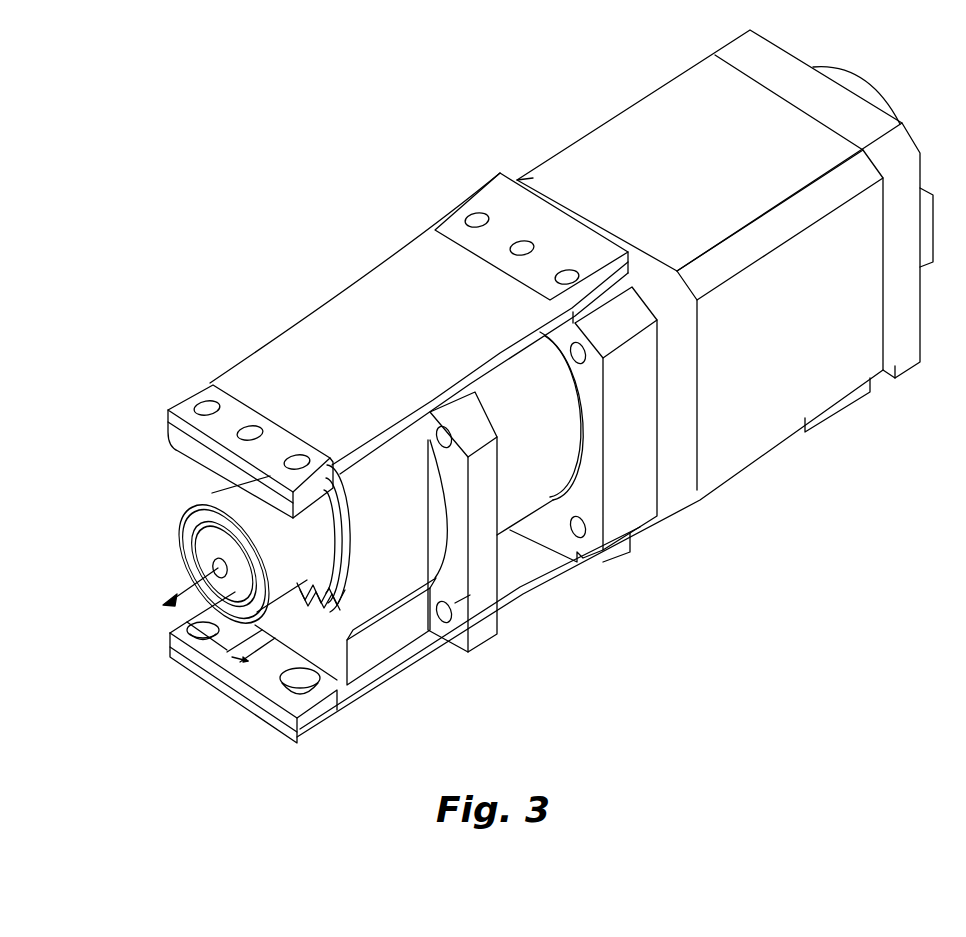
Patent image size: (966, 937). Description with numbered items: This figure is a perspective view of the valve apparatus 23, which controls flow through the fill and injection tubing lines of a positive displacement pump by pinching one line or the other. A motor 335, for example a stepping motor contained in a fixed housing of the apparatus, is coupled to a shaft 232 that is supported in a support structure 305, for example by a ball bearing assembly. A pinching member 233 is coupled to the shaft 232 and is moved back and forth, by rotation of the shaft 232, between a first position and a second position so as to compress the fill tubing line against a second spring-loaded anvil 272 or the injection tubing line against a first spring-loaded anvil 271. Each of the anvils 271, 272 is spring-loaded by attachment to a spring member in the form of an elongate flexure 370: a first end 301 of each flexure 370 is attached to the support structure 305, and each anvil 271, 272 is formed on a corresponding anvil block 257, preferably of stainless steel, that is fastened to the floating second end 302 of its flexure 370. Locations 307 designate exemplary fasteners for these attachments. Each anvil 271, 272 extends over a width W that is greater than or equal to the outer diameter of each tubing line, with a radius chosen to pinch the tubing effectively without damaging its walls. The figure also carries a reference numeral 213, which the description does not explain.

The valve apparatus 23 is at (393, 136).
The first end of flexure 301 is at (493, 192).
The fastener locations 307 is at (268, 420).
The floating second end of flexure 302 is at (192, 422).
The second spring-loaded anvil 272 is at (232, 493).
The direction arrow 213 is at (175, 592).
The pinching member 233 is at (301, 563).
The first spring-loaded anvil 271 is at (205, 668).
The width W is at (262, 665).
The support structure 305 is at (438, 528).
The elongate flexure 370 is at (397, 396).
The motor 335 is at (693, 171).
The anvil block 257 is at (455, 603).
The shaft 232 is at (345, 550).